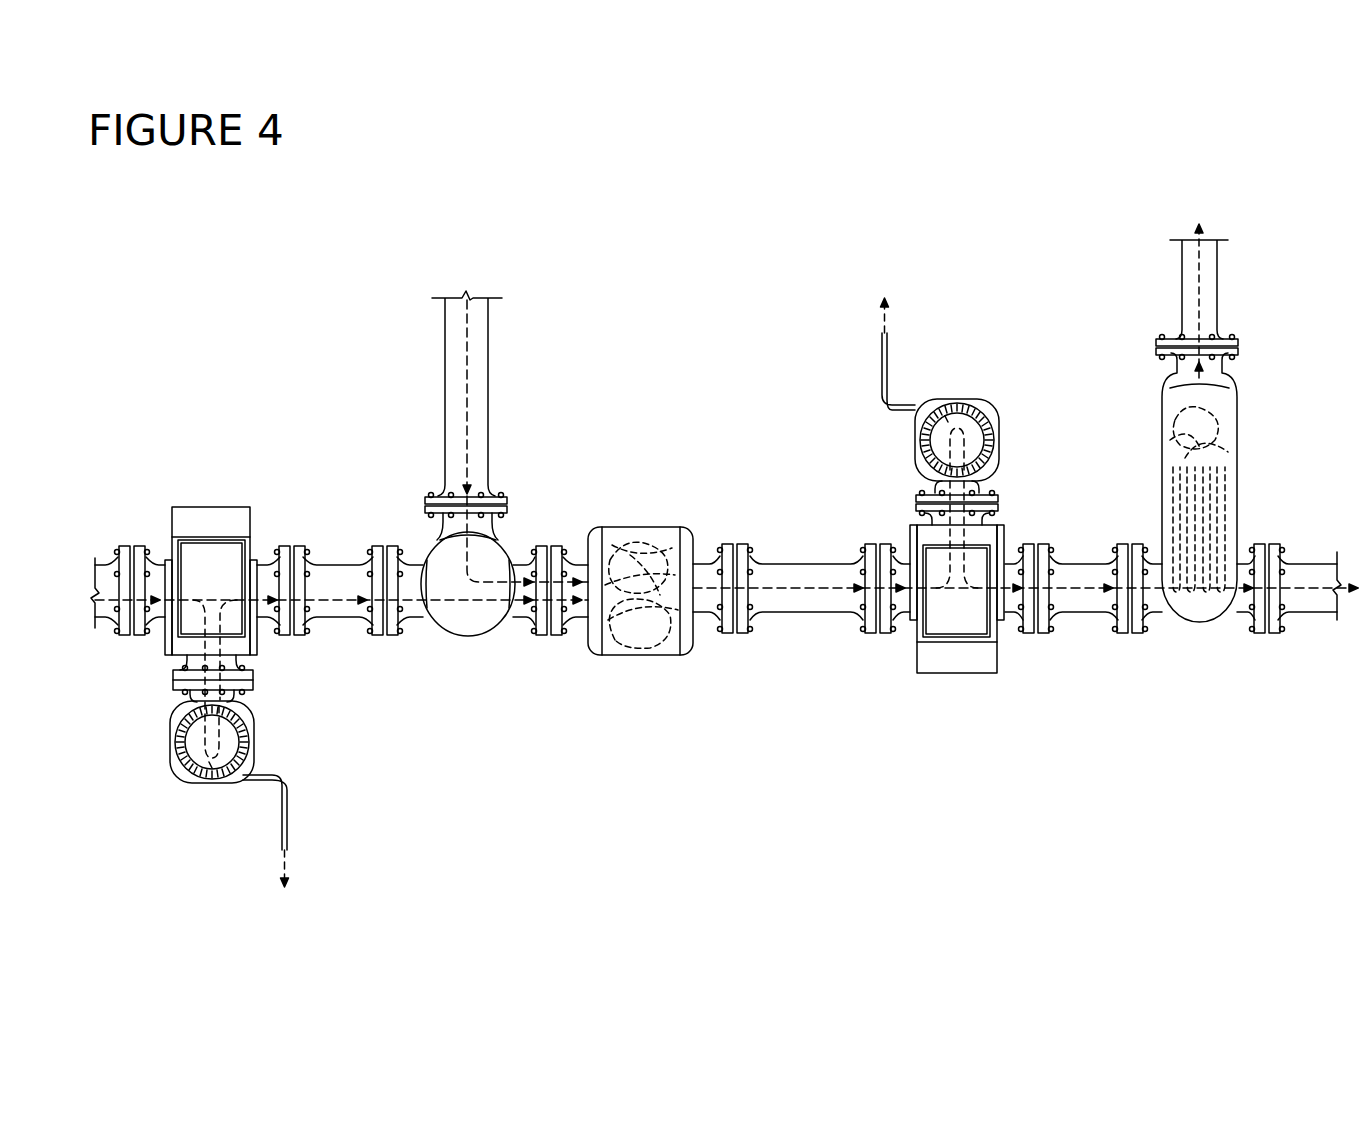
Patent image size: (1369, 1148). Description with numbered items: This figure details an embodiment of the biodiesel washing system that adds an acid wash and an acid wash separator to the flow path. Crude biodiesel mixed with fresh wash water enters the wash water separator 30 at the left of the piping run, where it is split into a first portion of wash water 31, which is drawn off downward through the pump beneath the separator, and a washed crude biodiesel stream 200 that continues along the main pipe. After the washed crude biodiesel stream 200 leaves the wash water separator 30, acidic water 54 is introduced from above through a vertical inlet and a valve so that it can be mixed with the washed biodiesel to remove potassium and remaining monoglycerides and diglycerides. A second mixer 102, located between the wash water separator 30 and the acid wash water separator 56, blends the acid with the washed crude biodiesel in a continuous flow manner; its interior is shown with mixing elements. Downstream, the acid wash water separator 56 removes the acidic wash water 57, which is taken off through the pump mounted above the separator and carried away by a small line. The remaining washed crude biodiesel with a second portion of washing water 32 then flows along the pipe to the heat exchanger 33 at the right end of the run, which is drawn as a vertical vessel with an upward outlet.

The wash water separator 30 is at (182, 777).
The first portion of wash water 31 is at (287, 860).
The washed crude biodiesel with a second portion of washing water 32 is at (1077, 590).
The heat exchanger 33 is at (1233, 497).
The acidic water 54 is at (468, 370).
The acid wash water separator 56 is at (988, 407).
The acidic wash water 57 is at (883, 325).
The second mixer 102 is at (642, 525).
The washed crude biodiesel stream 200 is at (328, 600).